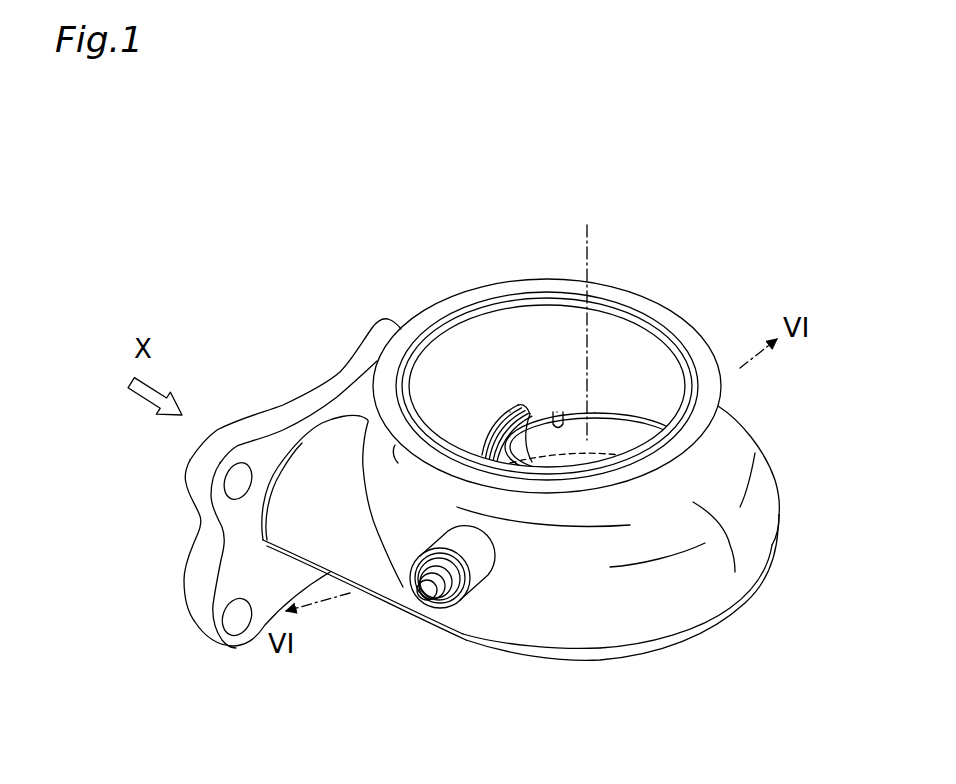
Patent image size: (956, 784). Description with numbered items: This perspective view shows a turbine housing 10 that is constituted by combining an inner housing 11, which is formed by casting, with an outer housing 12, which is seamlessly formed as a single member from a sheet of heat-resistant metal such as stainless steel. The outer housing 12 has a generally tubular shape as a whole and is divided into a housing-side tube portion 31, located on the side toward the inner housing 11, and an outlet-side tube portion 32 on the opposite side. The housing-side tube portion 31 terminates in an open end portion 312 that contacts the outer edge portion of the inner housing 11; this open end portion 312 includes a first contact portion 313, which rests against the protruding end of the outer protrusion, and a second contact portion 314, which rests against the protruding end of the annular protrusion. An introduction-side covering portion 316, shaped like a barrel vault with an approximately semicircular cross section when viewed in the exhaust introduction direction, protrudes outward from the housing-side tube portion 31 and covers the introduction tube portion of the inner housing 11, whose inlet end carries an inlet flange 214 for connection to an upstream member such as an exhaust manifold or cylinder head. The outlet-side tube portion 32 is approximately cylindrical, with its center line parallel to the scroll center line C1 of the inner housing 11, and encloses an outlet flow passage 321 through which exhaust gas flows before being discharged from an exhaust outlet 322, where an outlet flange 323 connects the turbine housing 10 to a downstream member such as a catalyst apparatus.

The turbine housing 10 is at (301, 280).
The inner housing 11 is at (745, 596).
The outer housing 12 is at (772, 457).
The housing-side tube portion 31 is at (777, 509).
The outlet-side tube portion 32 is at (699, 463).
The outlet flow passage 321 is at (515, 313).
The exhaust outlet 322 is at (468, 342).
The outlet flange 323 is at (675, 310).
The open end portion 312 is at (533, 627).
The first contact portion 313 is at (354, 560).
The second contact portion 314 is at (683, 607).
The introduction-side covering portion 316 is at (318, 457).
The inlet flange 214 is at (193, 573).
The scroll center line C1 is at (590, 242).